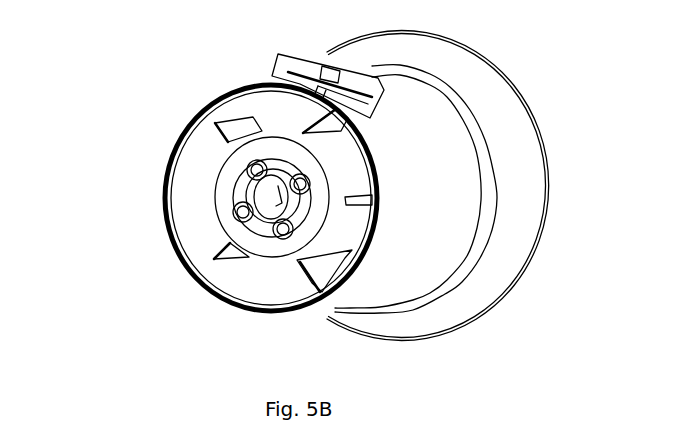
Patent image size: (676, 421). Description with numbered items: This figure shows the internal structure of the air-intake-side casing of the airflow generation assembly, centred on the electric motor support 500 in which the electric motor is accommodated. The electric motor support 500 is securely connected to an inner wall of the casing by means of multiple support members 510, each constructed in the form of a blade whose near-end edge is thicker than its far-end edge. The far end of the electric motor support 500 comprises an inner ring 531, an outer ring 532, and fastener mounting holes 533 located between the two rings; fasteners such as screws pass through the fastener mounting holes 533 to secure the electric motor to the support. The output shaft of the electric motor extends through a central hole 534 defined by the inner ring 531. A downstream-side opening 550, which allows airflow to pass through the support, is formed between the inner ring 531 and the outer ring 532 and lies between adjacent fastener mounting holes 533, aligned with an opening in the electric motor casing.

The electric motor support 500 is at (285, 130).
The support member 510 is at (227, 128).
The inner ring 531 is at (243, 240).
The outer ring 532 is at (318, 190).
The fastener mounting holes 533 is at (240, 170).
The central hole 534 is at (265, 197).
The downstream-side opening 550 is at (357, 257).